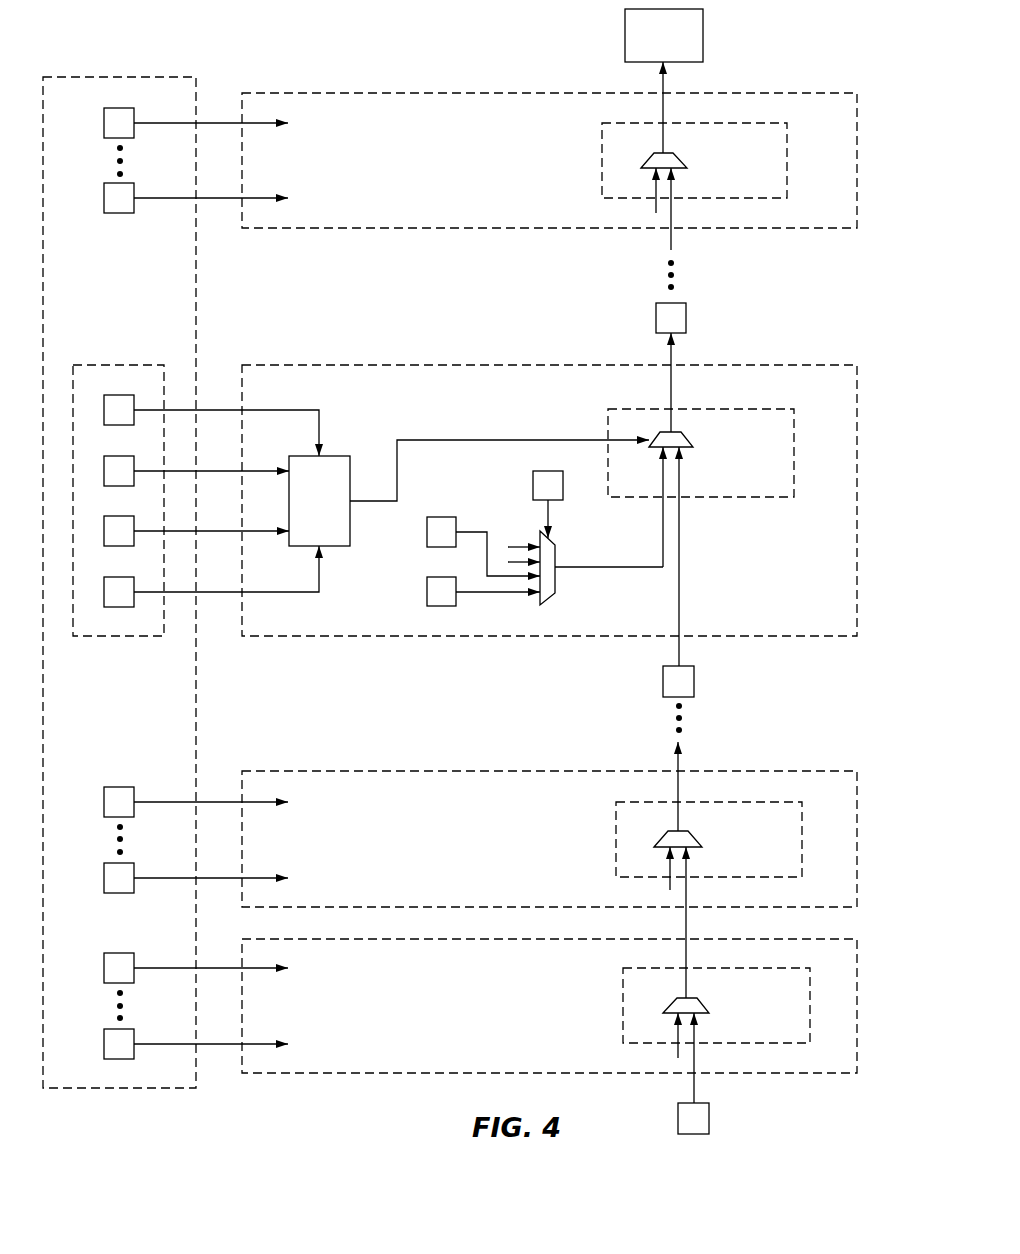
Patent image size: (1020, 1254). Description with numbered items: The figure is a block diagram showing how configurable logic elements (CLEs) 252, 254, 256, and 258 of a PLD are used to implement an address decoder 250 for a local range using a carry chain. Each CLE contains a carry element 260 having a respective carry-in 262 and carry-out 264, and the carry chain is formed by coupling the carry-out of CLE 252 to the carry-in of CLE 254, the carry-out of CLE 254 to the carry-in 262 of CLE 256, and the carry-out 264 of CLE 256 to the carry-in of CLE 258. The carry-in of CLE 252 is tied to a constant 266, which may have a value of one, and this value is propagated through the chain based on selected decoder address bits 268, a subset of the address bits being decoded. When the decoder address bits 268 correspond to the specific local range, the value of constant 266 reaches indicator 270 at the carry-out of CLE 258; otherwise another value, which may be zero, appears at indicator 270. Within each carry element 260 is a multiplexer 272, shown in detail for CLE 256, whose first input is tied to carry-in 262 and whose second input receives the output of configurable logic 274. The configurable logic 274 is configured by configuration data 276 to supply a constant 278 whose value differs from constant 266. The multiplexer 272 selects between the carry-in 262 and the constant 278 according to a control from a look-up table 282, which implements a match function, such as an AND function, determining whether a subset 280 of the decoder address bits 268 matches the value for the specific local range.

The address decoder 250 is at (201, 46).
The configurable logic element 252 is at (310, 939).
The configurable logic element 254 is at (268, 771).
The configurable logic element 256 is at (270, 365).
The configurable logic element 258 is at (270, 93).
The carry element 260 is at (762, 497).
The carry-in 262 is at (663, 687).
The carry-out 264 is at (656, 323).
The constant 266 is at (709, 1125).
The decoder address bits 268 is at (68, 77).
The indicator 270 is at (625, 47).
The multiplexer 272 is at (688, 451).
The configurable logic 274 is at (557, 582).
The configuration data 276 is at (533, 490).
The constant 278 is at (427, 592).
The subset of decoder address bits 280 is at (100, 365).
The look-up table 282 is at (337, 456).